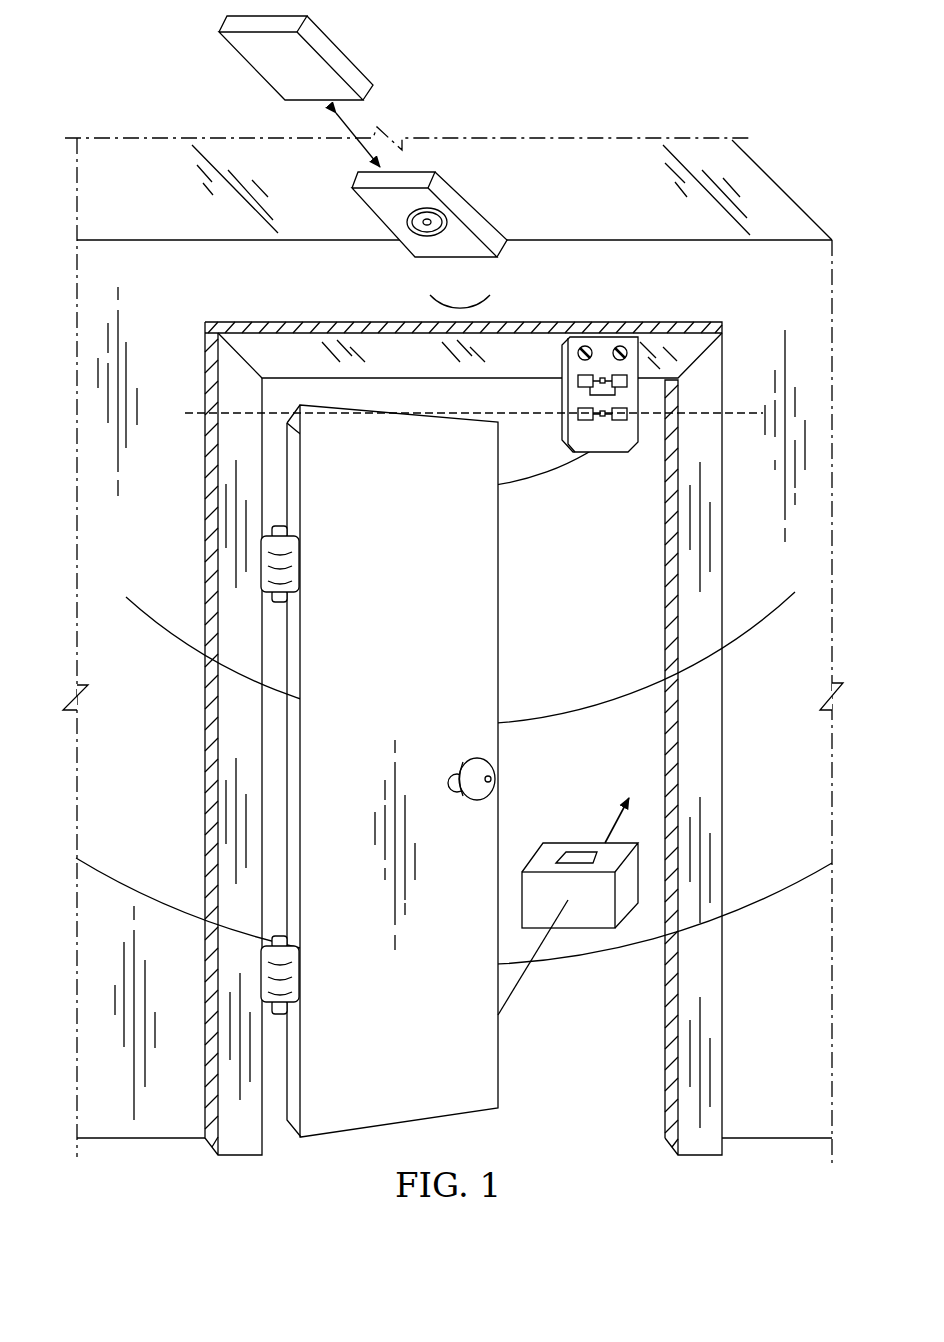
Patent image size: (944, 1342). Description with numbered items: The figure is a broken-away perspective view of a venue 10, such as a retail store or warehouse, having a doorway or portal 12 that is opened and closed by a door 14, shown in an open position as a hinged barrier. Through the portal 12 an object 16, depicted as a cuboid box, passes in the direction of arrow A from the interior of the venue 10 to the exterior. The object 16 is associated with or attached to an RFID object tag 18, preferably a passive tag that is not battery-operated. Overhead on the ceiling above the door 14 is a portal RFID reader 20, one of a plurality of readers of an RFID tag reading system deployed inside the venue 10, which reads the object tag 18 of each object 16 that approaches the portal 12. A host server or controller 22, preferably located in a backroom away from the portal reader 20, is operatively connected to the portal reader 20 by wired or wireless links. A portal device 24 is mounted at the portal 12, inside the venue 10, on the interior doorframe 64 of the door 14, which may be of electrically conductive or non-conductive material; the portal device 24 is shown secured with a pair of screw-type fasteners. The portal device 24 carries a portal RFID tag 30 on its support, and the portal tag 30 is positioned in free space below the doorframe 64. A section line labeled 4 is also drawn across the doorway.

The venue 10 is at (736, 54).
The host server or controller 22 is at (318, 68).
The portal RFID reader 20 is at (447, 213).
The portal device 24 is at (602, 343).
The portal RFID tag 30 is at (621, 427).
The interior doorframe 64 is at (283, 355).
The portal 12 is at (638, 1105).
The door 14 is at (460, 1110).
The object 16 is at (595, 917).
The RFID object tag 18 is at (597, 853).
The section line 4- 4 is at (185, 413).
The arrow A is at (633, 798).